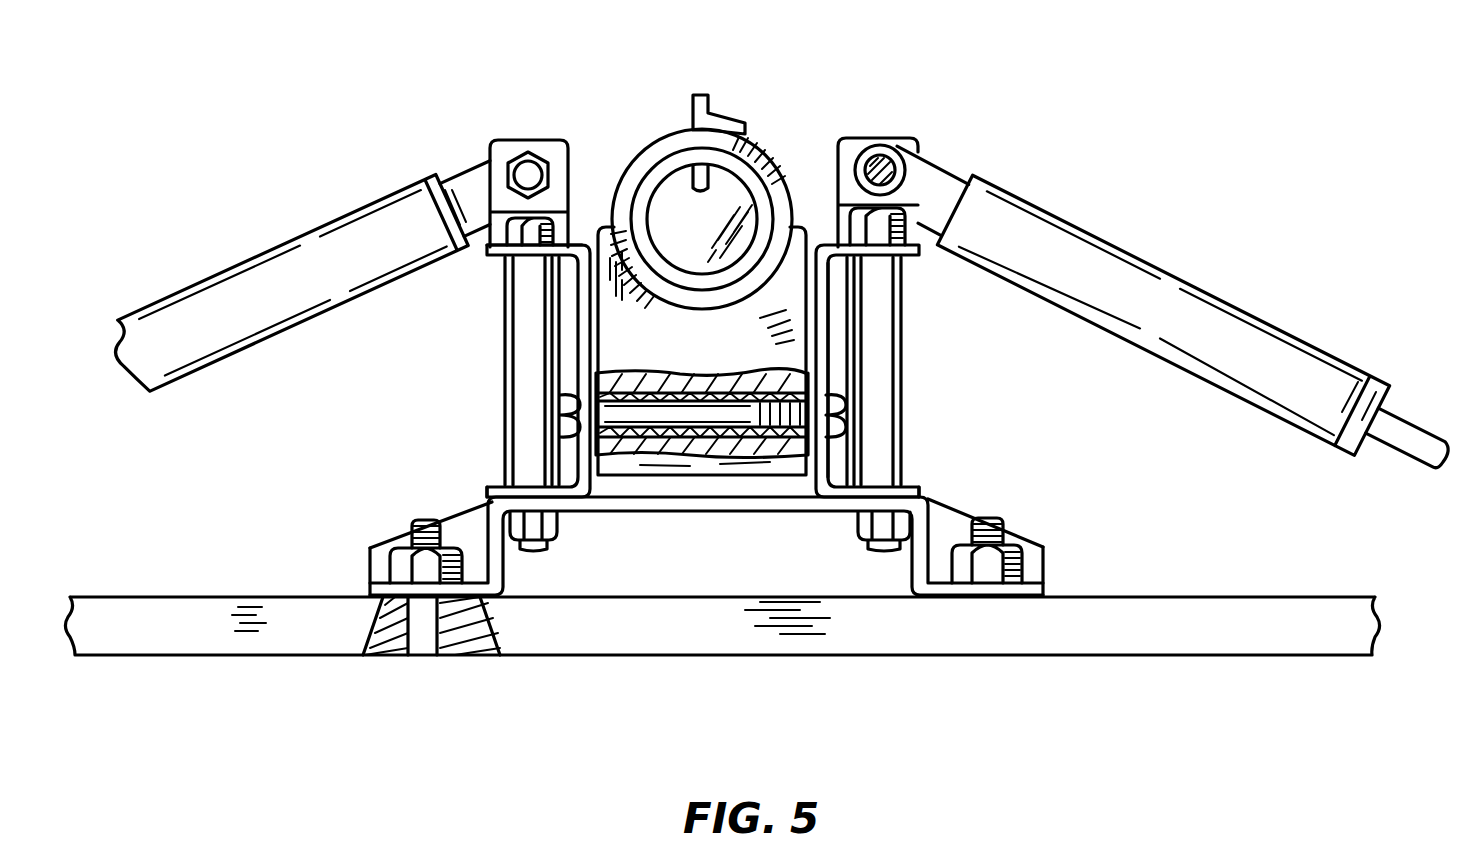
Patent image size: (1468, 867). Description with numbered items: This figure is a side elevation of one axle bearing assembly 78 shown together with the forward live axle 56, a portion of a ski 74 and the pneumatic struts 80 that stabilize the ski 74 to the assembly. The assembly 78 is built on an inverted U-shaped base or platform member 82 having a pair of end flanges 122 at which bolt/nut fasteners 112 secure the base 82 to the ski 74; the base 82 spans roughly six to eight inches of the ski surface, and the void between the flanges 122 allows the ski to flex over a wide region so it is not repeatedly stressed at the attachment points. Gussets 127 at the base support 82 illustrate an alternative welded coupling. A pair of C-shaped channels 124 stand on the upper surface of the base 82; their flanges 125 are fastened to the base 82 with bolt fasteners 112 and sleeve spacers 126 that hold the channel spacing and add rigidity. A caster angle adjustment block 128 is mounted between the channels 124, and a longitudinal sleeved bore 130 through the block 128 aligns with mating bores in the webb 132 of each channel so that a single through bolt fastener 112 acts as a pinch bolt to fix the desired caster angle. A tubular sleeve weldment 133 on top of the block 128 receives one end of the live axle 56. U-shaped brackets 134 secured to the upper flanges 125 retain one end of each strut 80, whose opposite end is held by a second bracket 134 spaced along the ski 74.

The forward live axle 56 is at (745, 180).
The ski 74 is at (748, 657).
The axle bearing assembly 78 is at (916, 380).
The pneumatic strut 80 is at (285, 306).
The base or platform member 82 is at (928, 507).
The bolt/nut fastener 112 is at (525, 158).
The end flange 122 is at (370, 588).
The C-shaped channel 124 is at (490, 484).
The flange 125 is at (490, 255).
The sleeve spacer 126 is at (500, 385).
The gusset 127 is at (385, 540).
The caster angle adjustment block 128 is at (739, 348).
The longitudinal sleeved bore 130 is at (668, 388).
The webb 132 is at (828, 357).
The tubular sleeve weldment 133 is at (652, 142).
The U-shaped bracket 134 is at (498, 142).